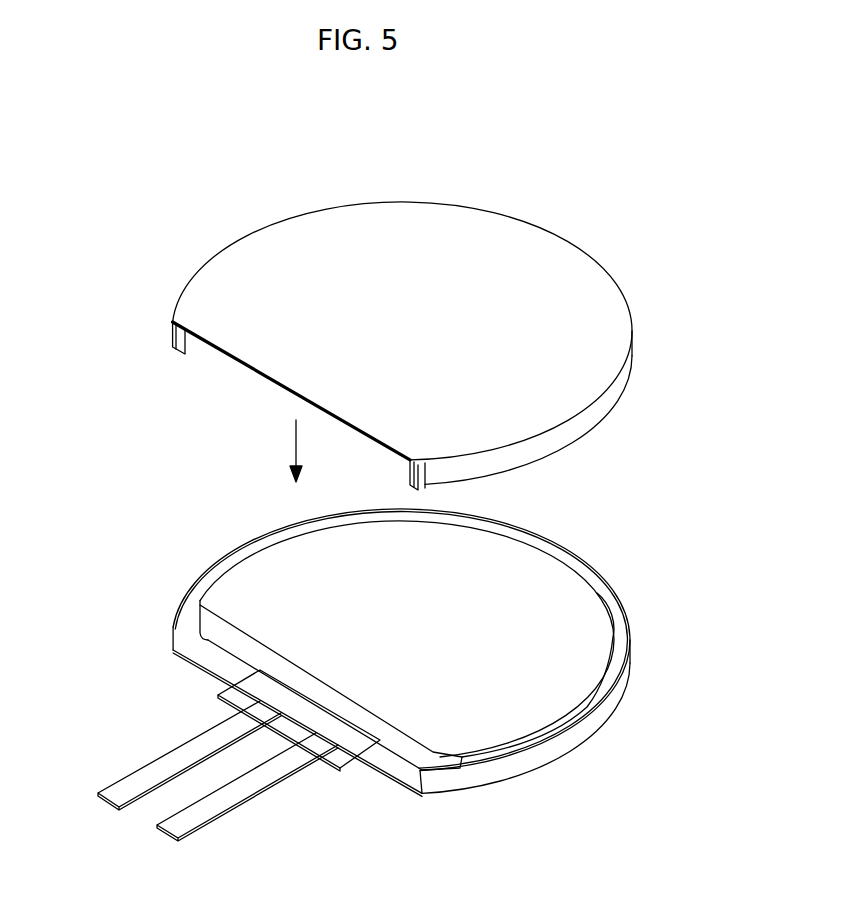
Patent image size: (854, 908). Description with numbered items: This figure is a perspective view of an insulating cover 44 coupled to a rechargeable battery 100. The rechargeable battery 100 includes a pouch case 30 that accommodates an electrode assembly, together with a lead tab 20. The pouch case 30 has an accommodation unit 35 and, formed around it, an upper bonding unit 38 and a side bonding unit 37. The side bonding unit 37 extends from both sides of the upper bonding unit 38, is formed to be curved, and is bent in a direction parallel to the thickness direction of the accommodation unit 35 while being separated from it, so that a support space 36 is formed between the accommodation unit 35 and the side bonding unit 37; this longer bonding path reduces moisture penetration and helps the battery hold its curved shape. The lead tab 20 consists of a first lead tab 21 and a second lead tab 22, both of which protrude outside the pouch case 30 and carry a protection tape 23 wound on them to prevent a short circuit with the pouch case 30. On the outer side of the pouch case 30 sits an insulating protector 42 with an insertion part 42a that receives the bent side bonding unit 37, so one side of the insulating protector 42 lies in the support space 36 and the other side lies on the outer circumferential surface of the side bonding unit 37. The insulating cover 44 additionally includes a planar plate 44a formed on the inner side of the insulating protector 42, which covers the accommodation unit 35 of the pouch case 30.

The rechargeable battery 100 is at (426, 137).
The insulating cover 44 is at (548, 217).
The planar plate 44a is at (274, 373).
The insulating protector 42 is at (596, 426).
The insertion part 42a is at (170, 333).
The pouch case 30 is at (617, 585).
The side bonding unit 37 is at (196, 588).
The support space 36 is at (183, 627).
The accommodation unit 35 is at (583, 633).
The upper bonding unit 38 is at (207, 662).
The protection tape 23 is at (287, 728).
The second lead tab 22 is at (108, 797).
The first lead tab 21 is at (166, 831).
The lead tab 20 is at (113, 872).